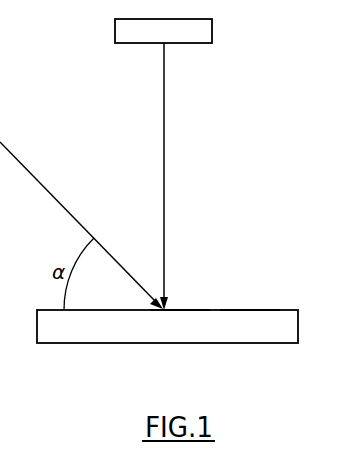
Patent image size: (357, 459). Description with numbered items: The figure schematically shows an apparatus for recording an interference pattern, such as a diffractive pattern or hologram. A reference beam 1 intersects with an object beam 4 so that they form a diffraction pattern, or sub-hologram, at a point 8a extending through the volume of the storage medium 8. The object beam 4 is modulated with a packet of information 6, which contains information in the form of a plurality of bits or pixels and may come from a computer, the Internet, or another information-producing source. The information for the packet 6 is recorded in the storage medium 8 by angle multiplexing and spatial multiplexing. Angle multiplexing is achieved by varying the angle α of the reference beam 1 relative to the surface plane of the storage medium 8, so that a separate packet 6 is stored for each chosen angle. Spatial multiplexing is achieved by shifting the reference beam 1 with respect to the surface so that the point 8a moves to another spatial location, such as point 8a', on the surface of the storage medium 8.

The reference beam 1 is at (15, 156).
The object beam 4 is at (164, 108).
The packet of information 6 is at (203, 28).
The storage medium 8 is at (217, 333).
The diffraction pattern (point) 8a is at (195, 274).
The point 8a' is at (266, 282).